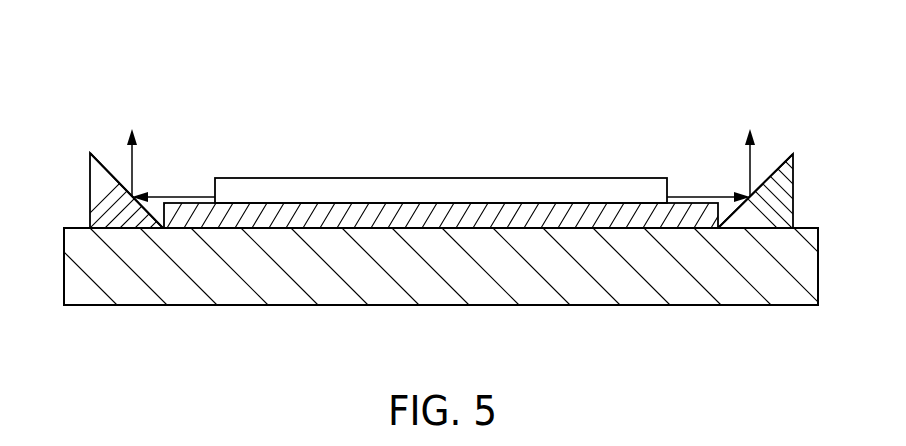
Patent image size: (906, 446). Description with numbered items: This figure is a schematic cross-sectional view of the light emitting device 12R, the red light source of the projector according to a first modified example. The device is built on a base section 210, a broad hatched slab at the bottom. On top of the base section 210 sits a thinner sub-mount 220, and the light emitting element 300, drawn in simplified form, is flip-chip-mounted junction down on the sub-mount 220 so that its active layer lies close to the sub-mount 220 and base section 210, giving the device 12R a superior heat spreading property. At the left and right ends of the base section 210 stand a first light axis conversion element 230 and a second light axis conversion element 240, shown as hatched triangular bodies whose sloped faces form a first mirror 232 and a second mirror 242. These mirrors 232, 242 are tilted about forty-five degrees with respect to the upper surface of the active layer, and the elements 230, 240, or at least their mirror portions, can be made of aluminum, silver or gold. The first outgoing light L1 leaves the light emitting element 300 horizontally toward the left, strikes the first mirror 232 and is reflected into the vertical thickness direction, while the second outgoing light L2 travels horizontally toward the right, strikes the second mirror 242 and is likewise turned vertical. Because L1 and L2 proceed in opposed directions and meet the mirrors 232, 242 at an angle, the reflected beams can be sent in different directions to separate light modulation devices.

The light emitting device 12R is at (704, 50).
The base section 210 is at (445, 296).
The sub-mount 220 is at (378, 213).
The first light axis conversion element 230 is at (131, 222).
The first mirror 232 is at (107, 163).
The second light axis conversion element 240 is at (765, 222).
The second mirror 242 is at (777, 163).
The light emitting element 300 is at (470, 188).
The first outgoing light L1 is at (182, 197).
The second outgoing light L2 is at (695, 197).